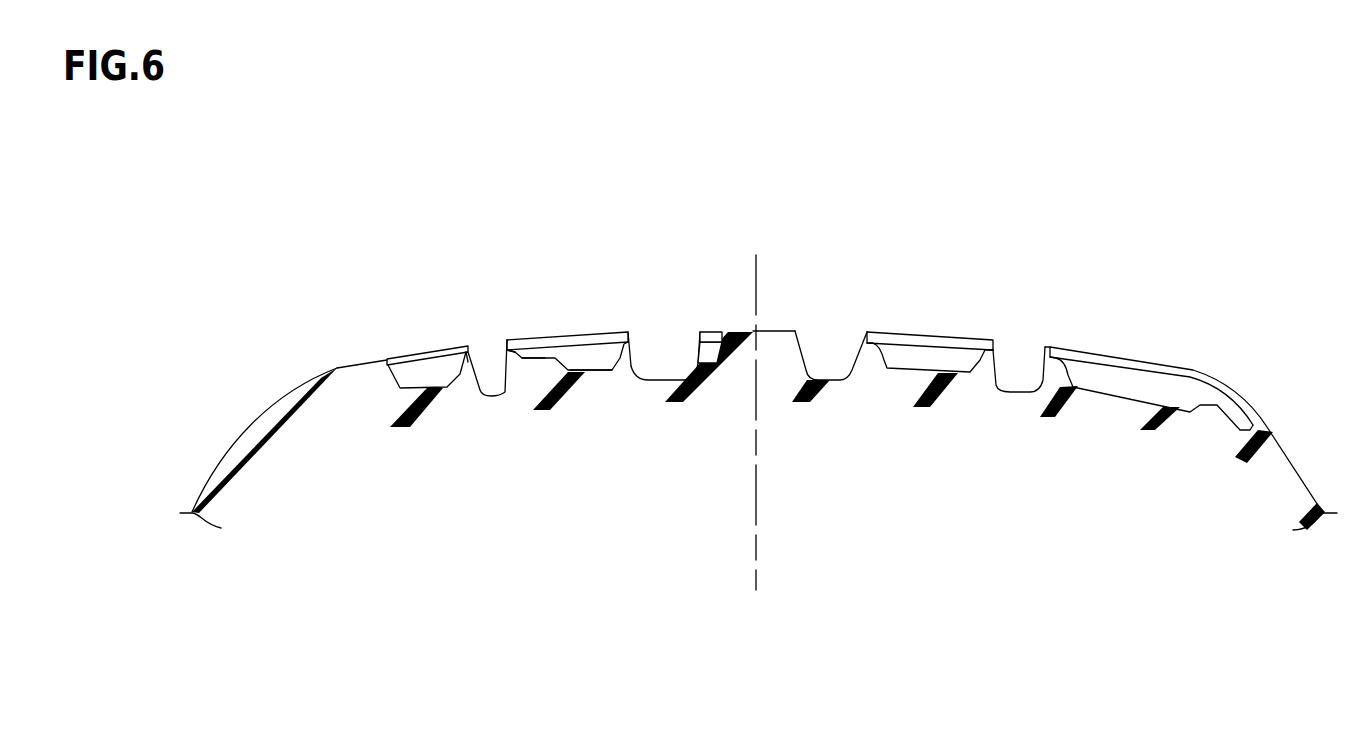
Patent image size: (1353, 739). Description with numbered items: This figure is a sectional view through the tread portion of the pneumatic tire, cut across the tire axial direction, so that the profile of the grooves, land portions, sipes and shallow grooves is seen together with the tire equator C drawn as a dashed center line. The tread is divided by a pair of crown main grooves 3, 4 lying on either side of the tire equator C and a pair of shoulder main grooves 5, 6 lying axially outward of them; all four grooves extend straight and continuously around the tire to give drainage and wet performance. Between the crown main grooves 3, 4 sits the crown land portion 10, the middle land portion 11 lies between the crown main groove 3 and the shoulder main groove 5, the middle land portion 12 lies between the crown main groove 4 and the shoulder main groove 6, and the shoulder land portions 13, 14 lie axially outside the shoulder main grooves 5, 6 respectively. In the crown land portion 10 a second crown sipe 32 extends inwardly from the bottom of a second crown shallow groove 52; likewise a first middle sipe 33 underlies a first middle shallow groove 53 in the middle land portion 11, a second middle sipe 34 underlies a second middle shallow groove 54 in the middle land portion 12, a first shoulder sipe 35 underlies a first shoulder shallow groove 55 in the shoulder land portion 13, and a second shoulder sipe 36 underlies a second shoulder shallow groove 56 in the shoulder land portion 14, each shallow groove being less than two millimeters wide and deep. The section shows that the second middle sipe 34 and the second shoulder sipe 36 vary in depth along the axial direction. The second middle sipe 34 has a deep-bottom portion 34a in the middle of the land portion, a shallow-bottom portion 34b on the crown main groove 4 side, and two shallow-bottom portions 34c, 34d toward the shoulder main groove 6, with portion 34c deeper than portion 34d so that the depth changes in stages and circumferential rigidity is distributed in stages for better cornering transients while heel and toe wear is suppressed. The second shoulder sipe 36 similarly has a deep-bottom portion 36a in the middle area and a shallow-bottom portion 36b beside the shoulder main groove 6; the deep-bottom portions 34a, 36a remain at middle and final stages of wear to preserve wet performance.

The crown main groove 3 is at (828, 353).
The crown main groove 4 is at (663, 357).
The shoulder main groove 5 is at (1018, 367).
The shoulder main groove 6 is at (490, 363).
The crown land portion 10 is at (782, 327).
The middle land portion 11 is at (927, 333).
The middle land portion 12 is at (560, 330).
The shoulder land portion 13 is at (1143, 357).
The shoulder land portion 14 is at (362, 363).
The second crown sipe 32 is at (707, 352).
The first middle sipe 33 is at (898, 355).
The second middle sipe 34 is at (583, 353).
The deep-bottom portion 34a is at (597, 372).
The shallow-bottom portion 34b is at (630, 367).
The shallow-bottom portion 34c is at (535, 357).
The shallow-bottom portion 34d is at (513, 353).
The first shoulder sipe 35 is at (1078, 367).
The second shoulder sipe 36 is at (450, 370).
The deep-bottom portion 36a is at (410, 390).
The shallow-bottom portion 36b is at (467, 370).
The second crown shallow groove 52 is at (712, 333).
The first middle shallow groove 53 is at (962, 342).
The second middle shallow groove 54 is at (528, 357).
The first shoulder shallow groove 55 is at (1170, 365).
The second shoulder shallow groove 56 is at (400, 360).
The tire equator C is at (760, 290).